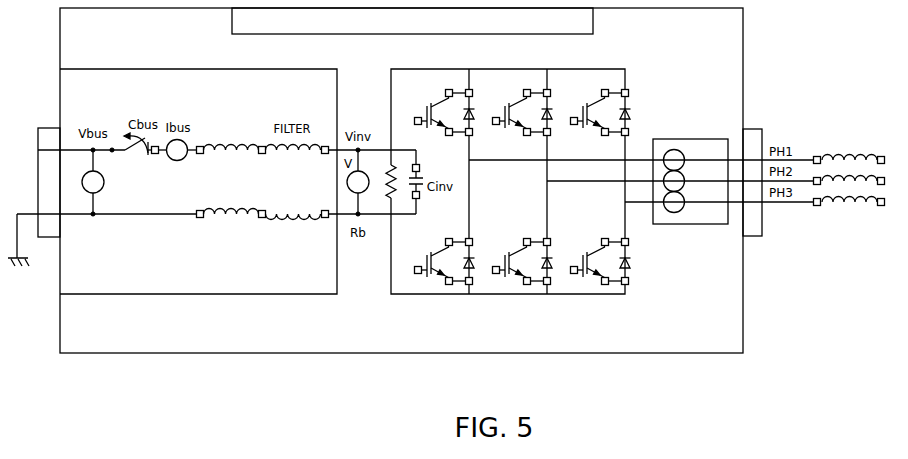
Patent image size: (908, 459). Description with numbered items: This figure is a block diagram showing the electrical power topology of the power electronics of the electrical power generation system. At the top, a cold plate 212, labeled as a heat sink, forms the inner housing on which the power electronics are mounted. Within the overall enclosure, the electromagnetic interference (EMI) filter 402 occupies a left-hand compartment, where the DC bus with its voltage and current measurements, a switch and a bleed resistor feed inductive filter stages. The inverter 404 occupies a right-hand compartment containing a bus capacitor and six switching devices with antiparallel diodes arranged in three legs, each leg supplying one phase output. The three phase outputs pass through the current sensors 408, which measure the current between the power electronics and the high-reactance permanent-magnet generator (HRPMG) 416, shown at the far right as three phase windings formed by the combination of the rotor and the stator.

The cold plate 212 is at (443, 31).
The electromagnetic interference (EMI) filter 402 is at (160, 295).
The inverter 404 is at (692, 343).
The current sensors 408 is at (686, 225).
The high-reactance permanent-magnet generator (HRPMG) 416 is at (839, 111).